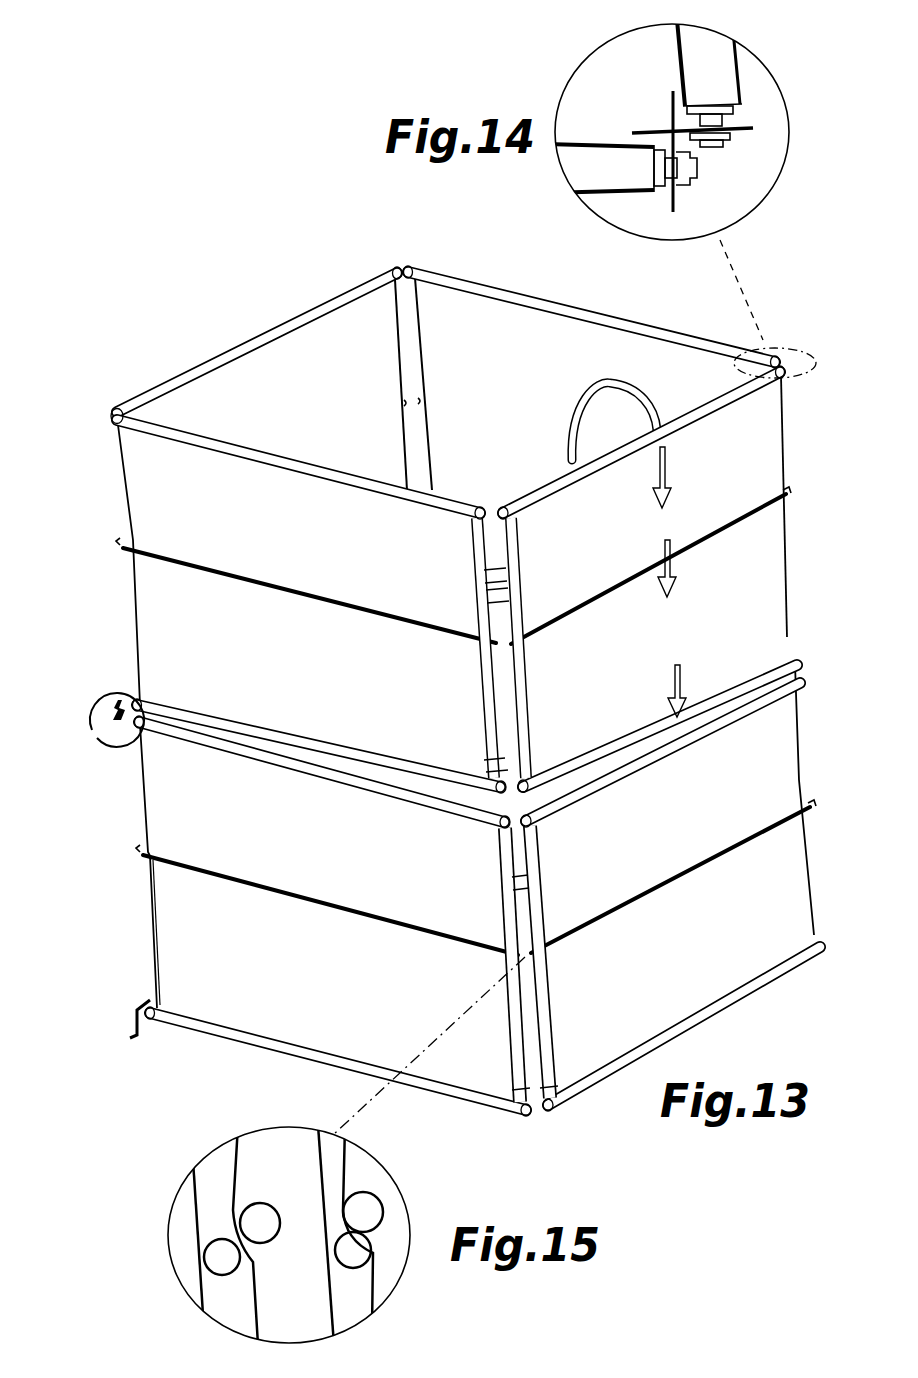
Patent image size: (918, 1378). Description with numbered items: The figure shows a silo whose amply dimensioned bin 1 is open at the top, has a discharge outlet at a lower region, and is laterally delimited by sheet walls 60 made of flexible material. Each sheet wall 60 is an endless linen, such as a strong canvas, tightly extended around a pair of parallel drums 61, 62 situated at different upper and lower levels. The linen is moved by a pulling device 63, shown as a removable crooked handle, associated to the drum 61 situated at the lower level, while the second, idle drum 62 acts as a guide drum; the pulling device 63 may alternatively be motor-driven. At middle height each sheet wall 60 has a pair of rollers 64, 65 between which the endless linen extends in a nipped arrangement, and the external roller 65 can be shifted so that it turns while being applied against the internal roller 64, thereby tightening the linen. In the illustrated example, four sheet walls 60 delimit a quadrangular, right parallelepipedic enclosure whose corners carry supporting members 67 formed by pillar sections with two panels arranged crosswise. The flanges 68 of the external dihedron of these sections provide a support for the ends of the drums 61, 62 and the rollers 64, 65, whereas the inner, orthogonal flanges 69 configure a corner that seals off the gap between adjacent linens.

In FIG. 13, the bin 1 is at (226, 320).
In FIG. 13, the sheet wall 60 is at (295, 357).
In FIG. 15, the sheet wall 60 is at (260, 1297).
In FIG. 13, the drum 61 is at (120, 405).
In FIG. 14, the drum 61 is at (738, 84).
In FIG. 13, the idle drum 62 is at (500, 770).
In FIG. 13, the pulling device 63 is at (100, 735).
In FIG. 15, the internal roller 64 is at (223, 1272).
In FIG. 13, the external roller 65 is at (183, 570).
In FIG. 15, the external roller 65 is at (367, 1202).
In FIG. 14, the supporting member 67 is at (714, 162).
In FIG. 14, the flange 68 is at (683, 195).
In FIG. 14, the inner orthogonal flange 69 is at (670, 95).